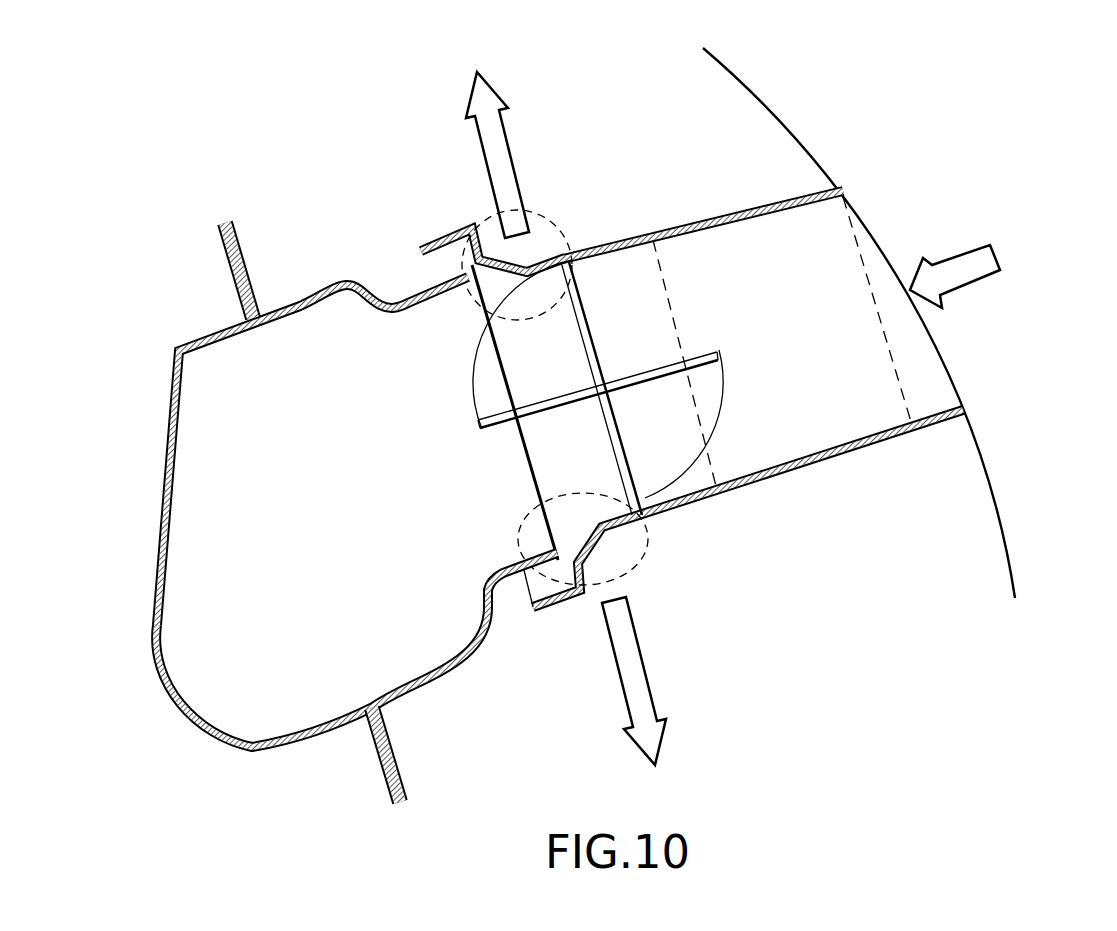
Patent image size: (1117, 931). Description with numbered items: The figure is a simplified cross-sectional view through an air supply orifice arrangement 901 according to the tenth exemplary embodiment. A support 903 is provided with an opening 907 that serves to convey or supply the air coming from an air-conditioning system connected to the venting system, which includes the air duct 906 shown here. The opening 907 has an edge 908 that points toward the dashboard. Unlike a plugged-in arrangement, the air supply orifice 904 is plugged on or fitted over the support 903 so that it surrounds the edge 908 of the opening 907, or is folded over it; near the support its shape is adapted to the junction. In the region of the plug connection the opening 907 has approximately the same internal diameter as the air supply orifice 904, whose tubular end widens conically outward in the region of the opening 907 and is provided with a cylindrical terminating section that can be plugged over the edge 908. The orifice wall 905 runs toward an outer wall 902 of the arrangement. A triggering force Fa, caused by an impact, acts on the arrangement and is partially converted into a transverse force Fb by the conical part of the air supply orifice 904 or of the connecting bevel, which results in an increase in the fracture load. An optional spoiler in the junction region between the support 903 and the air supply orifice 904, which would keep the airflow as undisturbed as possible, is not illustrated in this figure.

The connection structure 901 is at (404, 186).
The outer wall 902 is at (985, 466).
The support 903 is at (270, 270).
The air supply orifice 904 is at (651, 195).
The lower wall of duct 905 is at (765, 506).
The air duct 906 is at (330, 495).
The opening 907 is at (347, 622).
The edge 908 is at (476, 224).
The triggering force Fa is at (988, 262).
The transverse force Fb is at (497, 142).